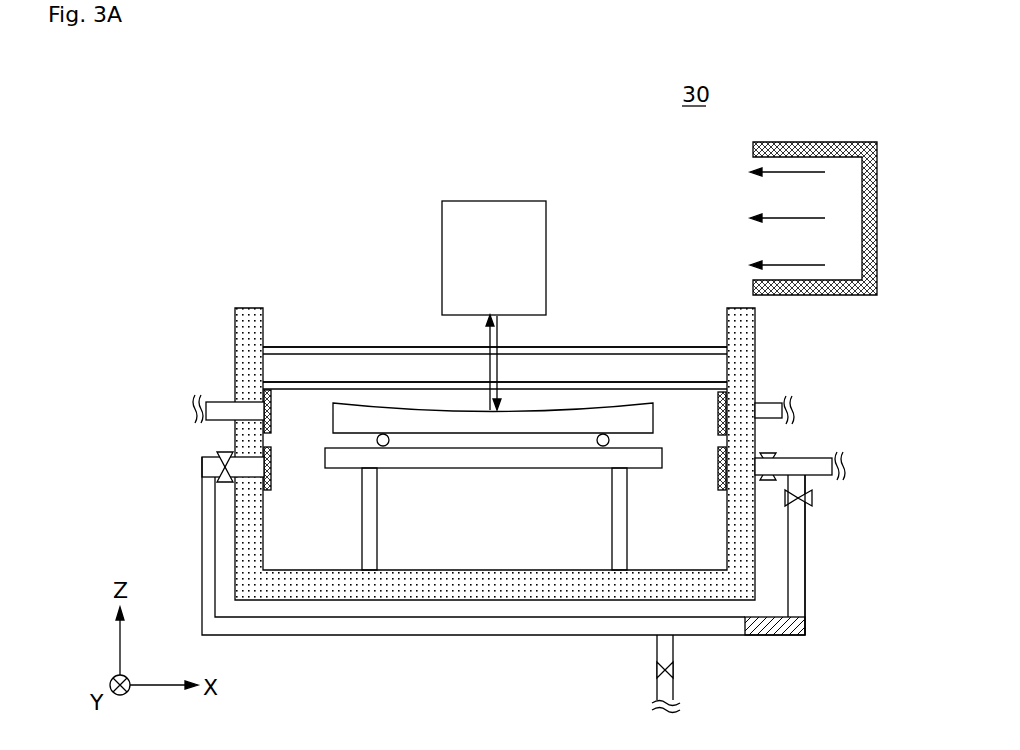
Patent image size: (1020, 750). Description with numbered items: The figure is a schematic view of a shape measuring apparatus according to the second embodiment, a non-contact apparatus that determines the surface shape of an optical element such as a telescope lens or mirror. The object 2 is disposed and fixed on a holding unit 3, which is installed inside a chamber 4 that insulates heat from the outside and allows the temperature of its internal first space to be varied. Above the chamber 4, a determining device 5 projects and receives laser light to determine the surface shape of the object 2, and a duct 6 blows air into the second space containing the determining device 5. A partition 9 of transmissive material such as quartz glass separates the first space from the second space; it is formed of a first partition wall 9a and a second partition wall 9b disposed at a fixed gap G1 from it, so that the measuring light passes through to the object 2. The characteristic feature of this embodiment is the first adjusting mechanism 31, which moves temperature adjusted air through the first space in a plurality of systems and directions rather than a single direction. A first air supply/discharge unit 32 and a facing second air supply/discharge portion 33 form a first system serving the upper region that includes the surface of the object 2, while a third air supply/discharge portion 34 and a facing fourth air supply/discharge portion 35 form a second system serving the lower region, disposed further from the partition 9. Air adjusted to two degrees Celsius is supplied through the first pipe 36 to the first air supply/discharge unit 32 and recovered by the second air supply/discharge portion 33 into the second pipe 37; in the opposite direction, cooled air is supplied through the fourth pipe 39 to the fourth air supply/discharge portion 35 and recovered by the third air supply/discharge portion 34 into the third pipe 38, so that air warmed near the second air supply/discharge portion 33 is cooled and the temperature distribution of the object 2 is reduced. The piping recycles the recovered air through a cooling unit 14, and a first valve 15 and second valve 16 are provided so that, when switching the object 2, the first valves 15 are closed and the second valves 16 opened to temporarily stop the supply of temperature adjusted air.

The object 2 is at (571, 426).
The holding unit 3 is at (652, 463).
The chamber 4 is at (759, 327).
The determining device 5 is at (548, 222).
The duct 6 is at (801, 142).
The partition 9 is at (682, 298).
The first partition wall 9a is at (594, 353).
The second partition wall 9b is at (652, 386).
The gap G1 is at (324, 362).
The cooling unit 14 is at (807, 624).
The first valve 15 is at (225, 483).
The second valve 16 is at (675, 668).
The first adjusting mechanism 31 is at (822, 368).
The first air supply/discharge unit 32 is at (272, 402).
The second air supply/discharge portion 33 is at (725, 393).
The third air supply/discharge portion 34 is at (272, 480).
The fourth air supply/discharge portion 35 is at (718, 469).
The first pipe 36 is at (249, 415).
The second pipe 37 is at (773, 402).
The third pipe 38 is at (253, 463).
The fourth pipe 39 is at (820, 457).